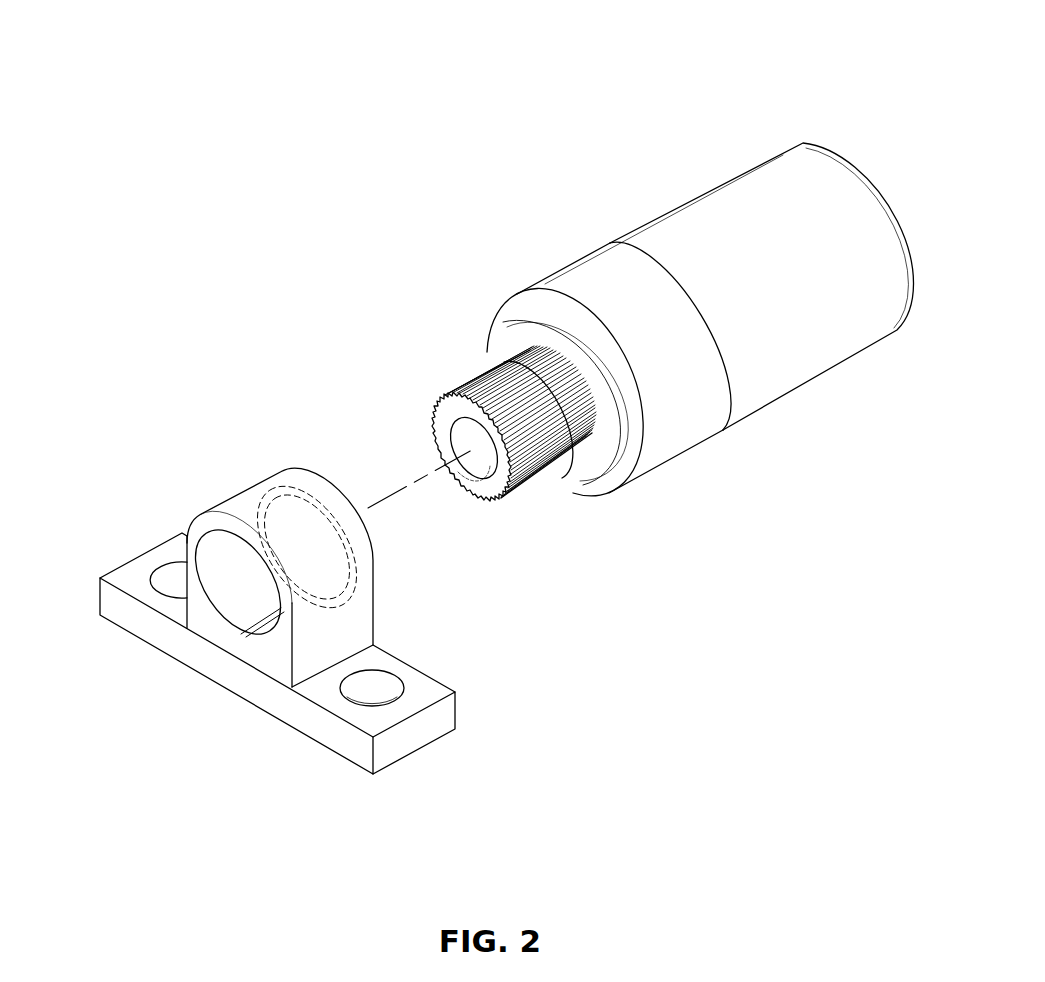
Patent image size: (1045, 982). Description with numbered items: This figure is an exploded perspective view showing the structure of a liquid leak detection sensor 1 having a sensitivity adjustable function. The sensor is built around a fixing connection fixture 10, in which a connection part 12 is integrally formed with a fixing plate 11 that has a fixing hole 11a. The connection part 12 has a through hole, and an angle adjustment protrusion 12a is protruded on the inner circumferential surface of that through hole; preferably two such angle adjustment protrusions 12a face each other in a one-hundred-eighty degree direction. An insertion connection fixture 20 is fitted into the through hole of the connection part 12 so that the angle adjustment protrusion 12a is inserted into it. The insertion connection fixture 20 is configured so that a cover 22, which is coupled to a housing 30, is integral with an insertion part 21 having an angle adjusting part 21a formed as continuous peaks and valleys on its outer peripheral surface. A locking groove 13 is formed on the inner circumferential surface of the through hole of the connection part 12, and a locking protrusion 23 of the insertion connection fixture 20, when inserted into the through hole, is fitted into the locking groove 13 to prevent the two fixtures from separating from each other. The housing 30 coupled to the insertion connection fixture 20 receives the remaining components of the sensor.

The liquid leak detection sensor 1 is at (328, 190).
The fixing connection fixture 10 is at (193, 698).
The fixing plate 11 is at (415, 742).
The fixing hole 11a is at (364, 702).
The connection part 12 is at (273, 483).
The angle adjustment protrusion 12a is at (213, 553).
The locking groove 13 is at (340, 573).
The insertion connection fixture 20 is at (668, 498).
The insertion part 21 is at (453, 408).
The angle adjusting part 21a is at (462, 390).
The cover 22 is at (597, 282).
The locking protrusion 23 is at (573, 454).
The housing 30 is at (832, 385).